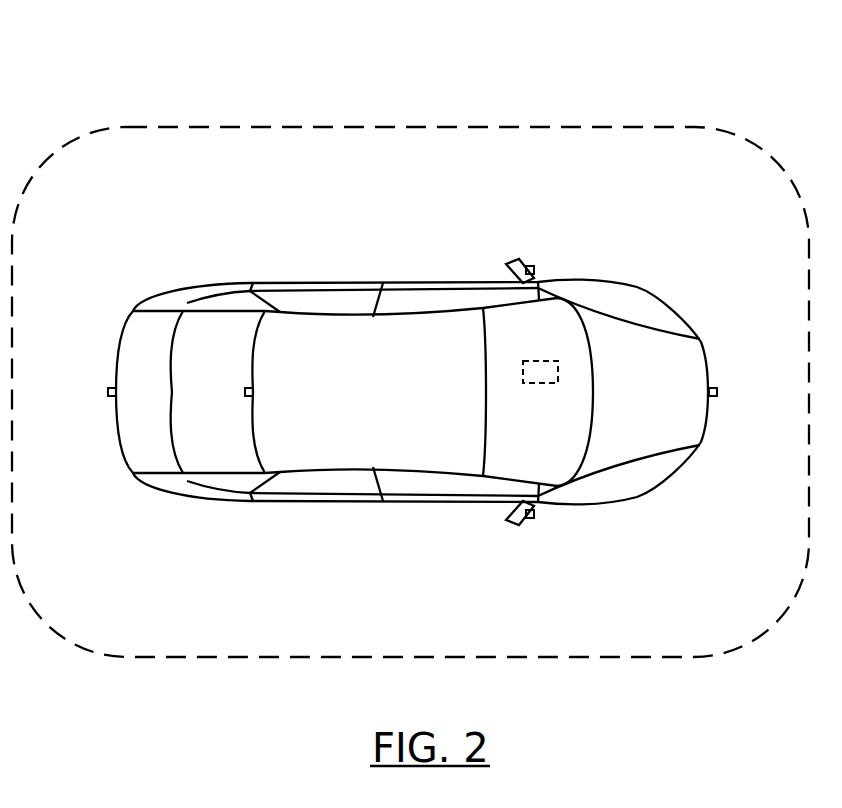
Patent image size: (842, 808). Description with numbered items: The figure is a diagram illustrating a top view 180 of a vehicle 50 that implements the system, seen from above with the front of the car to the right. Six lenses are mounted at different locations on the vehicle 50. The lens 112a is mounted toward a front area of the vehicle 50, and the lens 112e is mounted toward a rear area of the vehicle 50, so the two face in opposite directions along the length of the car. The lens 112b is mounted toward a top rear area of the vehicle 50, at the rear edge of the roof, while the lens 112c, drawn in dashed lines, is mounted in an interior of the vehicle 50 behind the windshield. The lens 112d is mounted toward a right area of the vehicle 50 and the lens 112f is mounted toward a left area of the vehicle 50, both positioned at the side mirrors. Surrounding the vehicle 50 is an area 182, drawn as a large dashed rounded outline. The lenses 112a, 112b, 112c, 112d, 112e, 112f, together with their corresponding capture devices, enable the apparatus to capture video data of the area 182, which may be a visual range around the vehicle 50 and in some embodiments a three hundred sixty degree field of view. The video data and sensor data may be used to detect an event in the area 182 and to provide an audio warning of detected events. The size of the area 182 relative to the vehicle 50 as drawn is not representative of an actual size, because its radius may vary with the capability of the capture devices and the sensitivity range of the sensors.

The top view 180 is at (403, 46).
The area 182 is at (200, 127).
The vehicle 50 is at (640, 283).
The lens 112a is at (717, 393).
The lens 112b is at (243, 393).
The lens 112c is at (542, 384).
The lens 112d is at (534, 514).
The lens 112e is at (107, 393).
The lens 112f is at (534, 269).